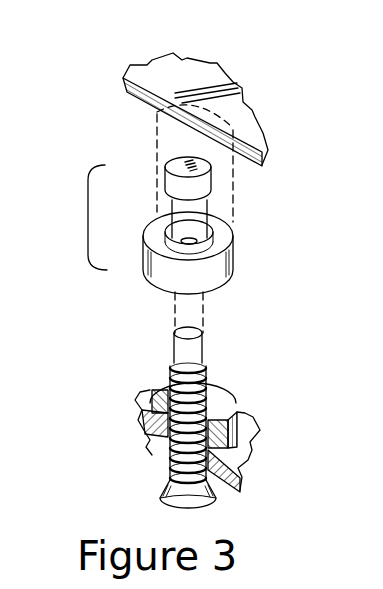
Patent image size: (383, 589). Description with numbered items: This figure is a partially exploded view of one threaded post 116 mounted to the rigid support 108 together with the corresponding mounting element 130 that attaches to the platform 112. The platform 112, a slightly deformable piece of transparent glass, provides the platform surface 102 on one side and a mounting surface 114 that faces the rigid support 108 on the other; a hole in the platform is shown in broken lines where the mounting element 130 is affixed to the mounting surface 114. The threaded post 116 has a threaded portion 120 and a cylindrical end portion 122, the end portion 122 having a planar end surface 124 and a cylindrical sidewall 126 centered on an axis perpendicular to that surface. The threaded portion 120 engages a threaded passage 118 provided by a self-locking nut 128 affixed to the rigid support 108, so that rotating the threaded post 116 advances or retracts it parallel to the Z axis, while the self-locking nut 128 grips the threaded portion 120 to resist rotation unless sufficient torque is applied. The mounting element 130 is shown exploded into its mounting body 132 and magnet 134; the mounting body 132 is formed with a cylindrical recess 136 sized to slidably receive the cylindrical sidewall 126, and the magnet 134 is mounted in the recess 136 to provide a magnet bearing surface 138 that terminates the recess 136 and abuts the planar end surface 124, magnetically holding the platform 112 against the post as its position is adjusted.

The platform surface 102 is at (182, 68).
The rigid support 108 is at (237, 437).
The platform 112 is at (131, 67).
The mounting surface 114 is at (153, 104).
The threaded post 116 is at (157, 469).
The threaded passage 118 is at (210, 418).
The threaded portion 120 is at (170, 460).
The cylindrical end portion 122 is at (175, 400).
The planar end surface 124 is at (187, 334).
The cylindrical sidewall 126 is at (198, 352).
The self-locking nut 128 is at (217, 397).
The mounting element 130 is at (88, 218).
The mounting body 132 is at (237, 258).
The magnet 134 is at (162, 176).
The cylindrical recess 136 is at (210, 233).
The magnet bearing surface 138 is at (177, 202).